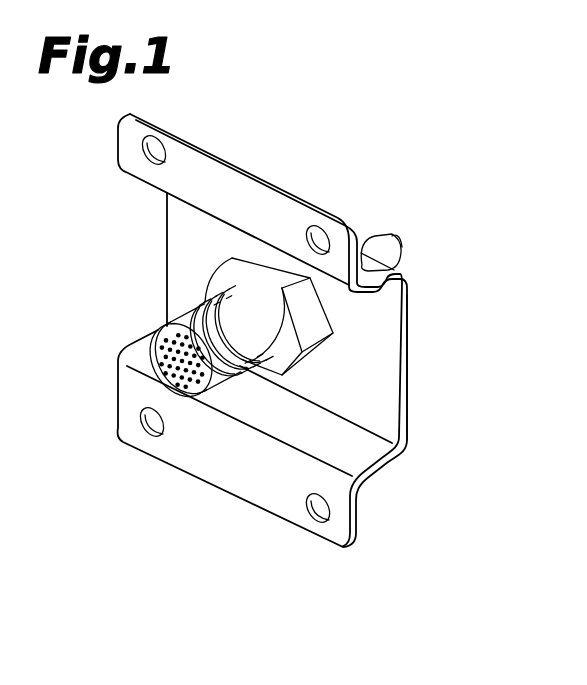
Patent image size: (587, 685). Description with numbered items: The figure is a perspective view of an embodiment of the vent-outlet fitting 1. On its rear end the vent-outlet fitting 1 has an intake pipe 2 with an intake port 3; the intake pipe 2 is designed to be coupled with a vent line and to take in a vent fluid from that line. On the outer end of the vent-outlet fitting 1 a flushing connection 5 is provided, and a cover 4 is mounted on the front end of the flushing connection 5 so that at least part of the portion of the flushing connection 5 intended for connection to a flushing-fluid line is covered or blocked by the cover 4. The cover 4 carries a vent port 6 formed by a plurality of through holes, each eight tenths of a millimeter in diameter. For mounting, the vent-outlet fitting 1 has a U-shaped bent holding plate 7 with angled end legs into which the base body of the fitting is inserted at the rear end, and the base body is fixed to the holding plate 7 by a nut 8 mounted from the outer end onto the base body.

The vent-outlet fitting 1 is at (376, 150).
The intake pipe 2 is at (377, 248).
The intake port 3 is at (402, 240).
The cover 4 is at (191, 396).
The flushing connection 5 is at (215, 292).
The vent port 6 is at (186, 392).
The holding plate 7 is at (406, 326).
The nut 8 is at (320, 324).